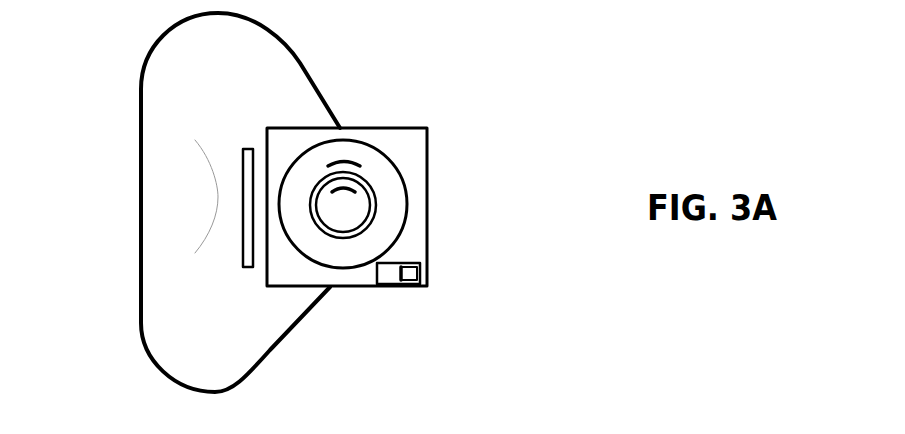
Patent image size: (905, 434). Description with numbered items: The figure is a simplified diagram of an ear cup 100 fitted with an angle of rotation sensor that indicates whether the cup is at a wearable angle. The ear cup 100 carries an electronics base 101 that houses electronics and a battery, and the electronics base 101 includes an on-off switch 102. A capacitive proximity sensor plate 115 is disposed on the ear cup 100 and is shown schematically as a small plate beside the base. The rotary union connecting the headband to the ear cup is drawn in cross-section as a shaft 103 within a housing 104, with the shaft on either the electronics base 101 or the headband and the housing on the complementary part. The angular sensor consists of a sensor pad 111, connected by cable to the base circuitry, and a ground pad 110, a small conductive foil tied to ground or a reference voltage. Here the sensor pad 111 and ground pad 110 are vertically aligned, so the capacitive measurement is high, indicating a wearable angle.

The ear cup 100 is at (210, 355).
The electronics base 101 is at (307, 265).
The on-off switch 102 is at (402, 285).
The shaft 103 is at (350, 206).
The housing 104 is at (380, 241).
The ground pad 110 is at (343, 158).
The sensor pad 111 is at (365, 181).
The capacitive proximity sensor plate 115 is at (246, 150).